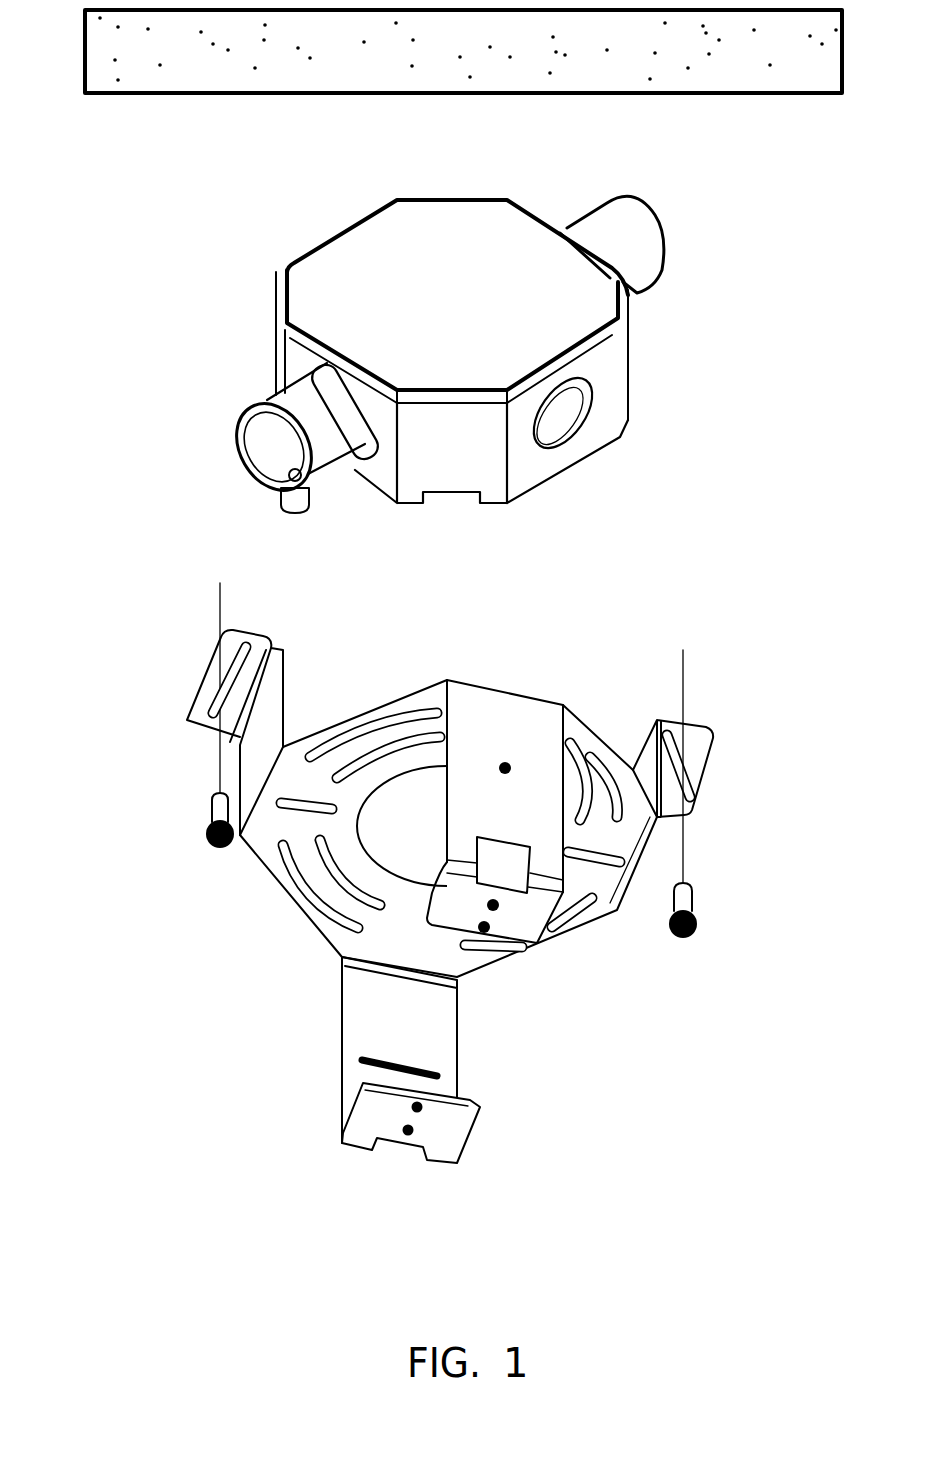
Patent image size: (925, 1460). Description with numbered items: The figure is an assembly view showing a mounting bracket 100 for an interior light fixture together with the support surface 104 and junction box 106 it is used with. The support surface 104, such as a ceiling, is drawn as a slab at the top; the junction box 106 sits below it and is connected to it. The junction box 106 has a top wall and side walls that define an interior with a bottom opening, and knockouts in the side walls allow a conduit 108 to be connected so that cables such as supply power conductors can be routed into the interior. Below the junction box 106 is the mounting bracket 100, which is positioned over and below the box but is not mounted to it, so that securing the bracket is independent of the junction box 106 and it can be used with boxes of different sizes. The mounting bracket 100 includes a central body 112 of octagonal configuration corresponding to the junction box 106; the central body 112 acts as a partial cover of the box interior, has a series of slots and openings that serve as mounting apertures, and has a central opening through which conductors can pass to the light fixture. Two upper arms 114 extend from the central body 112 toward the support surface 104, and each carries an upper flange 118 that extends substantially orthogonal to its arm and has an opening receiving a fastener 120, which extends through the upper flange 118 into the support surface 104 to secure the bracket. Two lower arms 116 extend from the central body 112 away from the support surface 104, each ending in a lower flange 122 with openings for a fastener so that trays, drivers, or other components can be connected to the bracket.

The mounting bracket 100 is at (147, 963).
The support surface 104 is at (180, 97).
The junction box 106 is at (640, 373).
The conduit 108 is at (670, 248).
The central body 112 is at (580, 927).
The upper arm 114 is at (240, 753).
The lower arm 116 is at (453, 1040).
The upper flange 118 is at (230, 663).
The fastener 120 is at (210, 820).
The lower flange 122 is at (480, 1108).